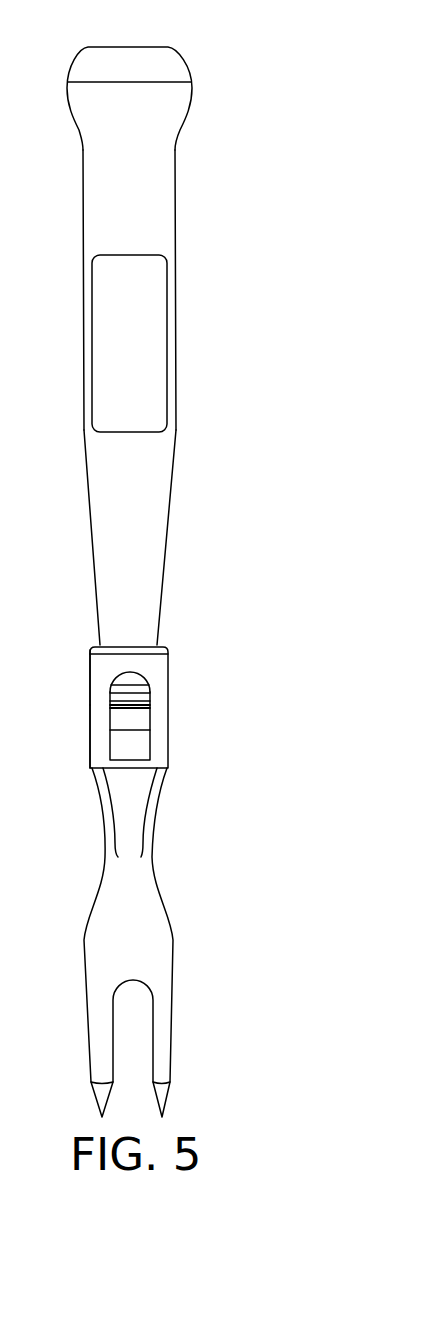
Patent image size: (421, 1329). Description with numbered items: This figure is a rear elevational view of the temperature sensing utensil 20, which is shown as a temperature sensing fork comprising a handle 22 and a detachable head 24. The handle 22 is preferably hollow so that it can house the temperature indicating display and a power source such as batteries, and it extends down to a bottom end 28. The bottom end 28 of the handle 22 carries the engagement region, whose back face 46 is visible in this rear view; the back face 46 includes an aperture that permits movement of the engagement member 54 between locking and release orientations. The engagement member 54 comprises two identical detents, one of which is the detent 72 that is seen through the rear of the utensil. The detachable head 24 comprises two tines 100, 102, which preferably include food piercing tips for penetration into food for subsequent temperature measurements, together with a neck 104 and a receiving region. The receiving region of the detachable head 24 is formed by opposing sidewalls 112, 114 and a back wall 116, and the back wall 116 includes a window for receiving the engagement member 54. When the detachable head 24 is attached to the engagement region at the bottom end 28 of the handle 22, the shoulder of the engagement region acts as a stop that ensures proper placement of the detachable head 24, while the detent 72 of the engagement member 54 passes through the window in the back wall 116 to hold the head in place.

The temperature sensing utensil 20 is at (230, 89).
The handle 22 is at (176, 447).
The detachable head 24 is at (167, 903).
The bottom end 28 is at (160, 622).
The back face 46 is at (122, 750).
The engagement member 54 is at (140, 716).
The detent 72 is at (140, 690).
The tine 100 is at (160, 1068).
The tine 102 is at (92, 1055).
The neck 104 is at (152, 822).
The sidewall 112 is at (168, 707).
The sidewall 114 is at (88, 737).
The back wall 116 is at (98, 672).